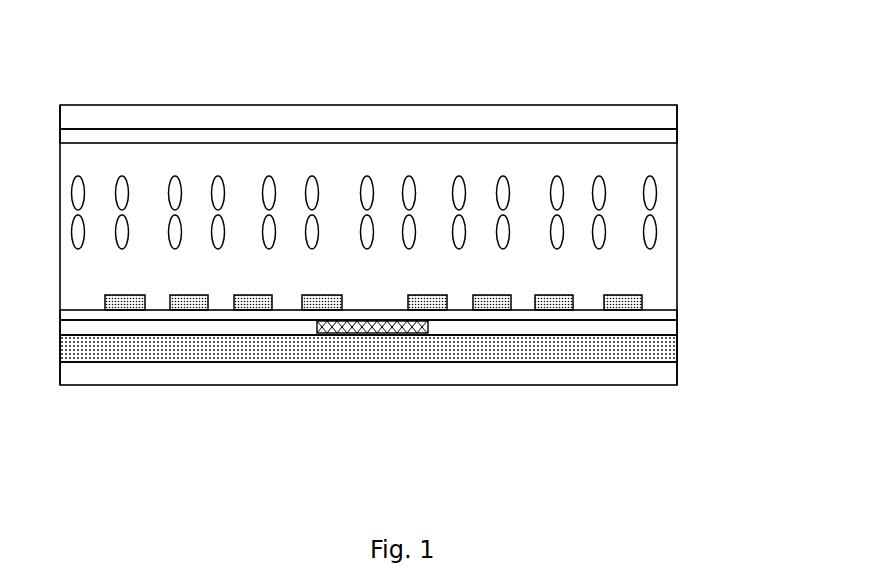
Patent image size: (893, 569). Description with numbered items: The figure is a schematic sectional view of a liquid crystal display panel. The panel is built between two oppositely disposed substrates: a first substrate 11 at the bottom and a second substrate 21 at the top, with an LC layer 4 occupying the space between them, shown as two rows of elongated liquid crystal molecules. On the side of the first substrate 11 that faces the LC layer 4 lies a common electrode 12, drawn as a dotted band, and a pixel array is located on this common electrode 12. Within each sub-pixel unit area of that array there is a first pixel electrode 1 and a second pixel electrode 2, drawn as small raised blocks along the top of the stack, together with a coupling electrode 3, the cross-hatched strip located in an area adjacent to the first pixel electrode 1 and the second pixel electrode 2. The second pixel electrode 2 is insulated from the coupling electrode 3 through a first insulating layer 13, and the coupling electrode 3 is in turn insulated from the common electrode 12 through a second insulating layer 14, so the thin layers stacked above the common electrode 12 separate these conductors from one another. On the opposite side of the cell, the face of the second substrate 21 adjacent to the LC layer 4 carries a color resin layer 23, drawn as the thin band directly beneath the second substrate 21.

The first pixel electrode 1 is at (320, 300).
The second pixel electrode 2 is at (617, 300).
The coupling electrode 3 is at (372, 330).
The LC layer 4 is at (667, 238).
The first substrate 11 is at (85, 370).
The common electrode 12 is at (325, 355).
The first insulating layer 13 is at (660, 313).
The second insulating layer 14 is at (637, 330).
The second substrate 21 is at (97, 114).
The color resin layer 23 is at (610, 142).